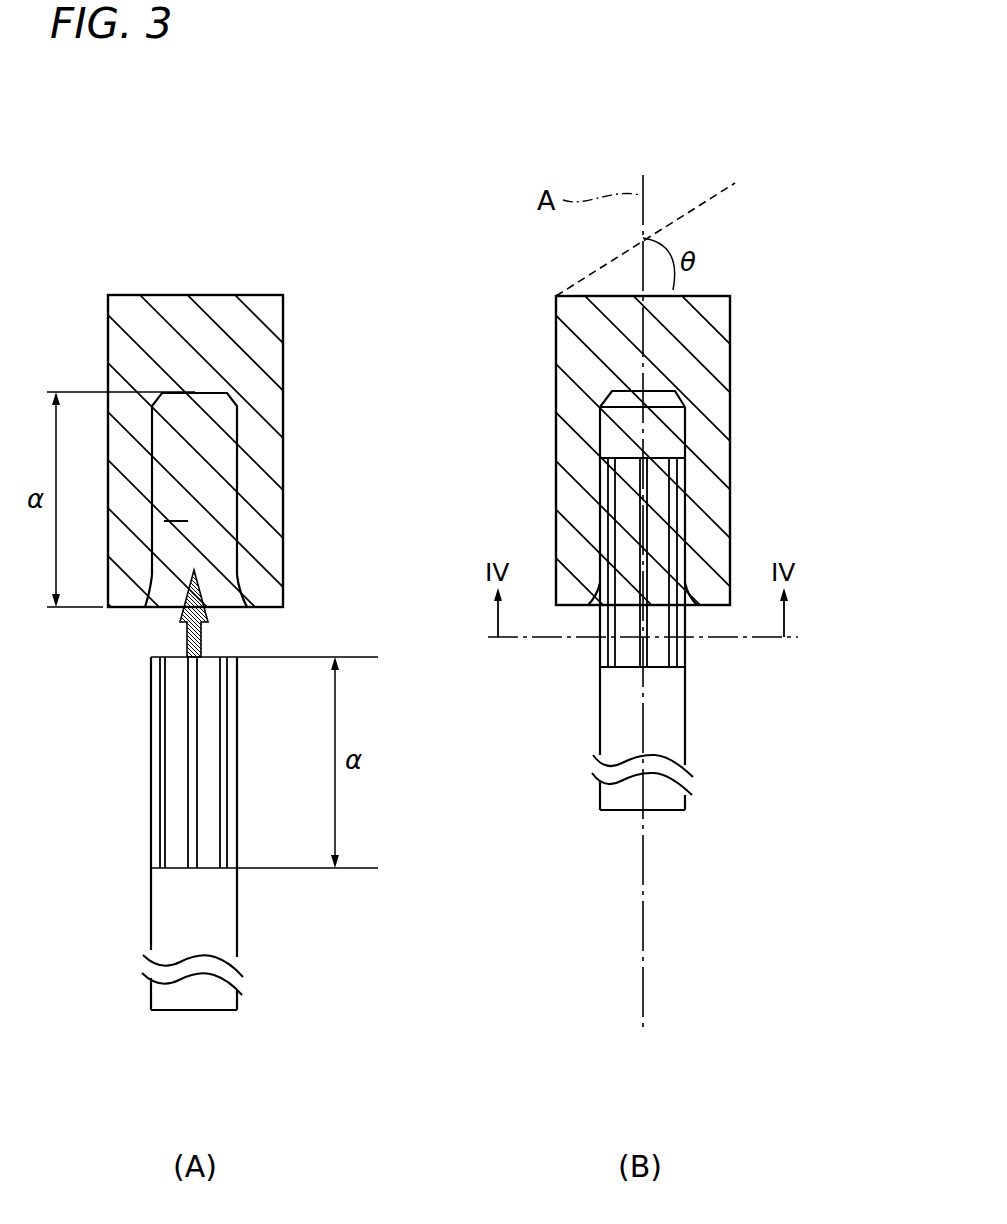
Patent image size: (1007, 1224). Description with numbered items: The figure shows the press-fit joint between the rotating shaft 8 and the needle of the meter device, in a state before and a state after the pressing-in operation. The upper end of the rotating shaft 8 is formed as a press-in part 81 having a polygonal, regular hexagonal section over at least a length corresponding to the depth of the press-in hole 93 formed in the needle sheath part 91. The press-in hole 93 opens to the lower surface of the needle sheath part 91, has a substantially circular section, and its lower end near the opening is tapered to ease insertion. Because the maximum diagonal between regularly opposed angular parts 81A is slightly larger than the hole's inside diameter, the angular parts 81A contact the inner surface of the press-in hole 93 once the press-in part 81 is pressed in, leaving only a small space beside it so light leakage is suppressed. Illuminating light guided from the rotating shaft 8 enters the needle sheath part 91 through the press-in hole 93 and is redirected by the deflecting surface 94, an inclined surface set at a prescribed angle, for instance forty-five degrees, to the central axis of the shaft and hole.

The rotating shaft 8 is at (250, 903).
The press-in part 81 is at (178, 722).
The angular parts 81A is at (220, 788).
The needle sheath part 91 is at (288, 358).
The press-in hole 93 is at (262, 503).
The deflecting surface 94 is at (714, 207).